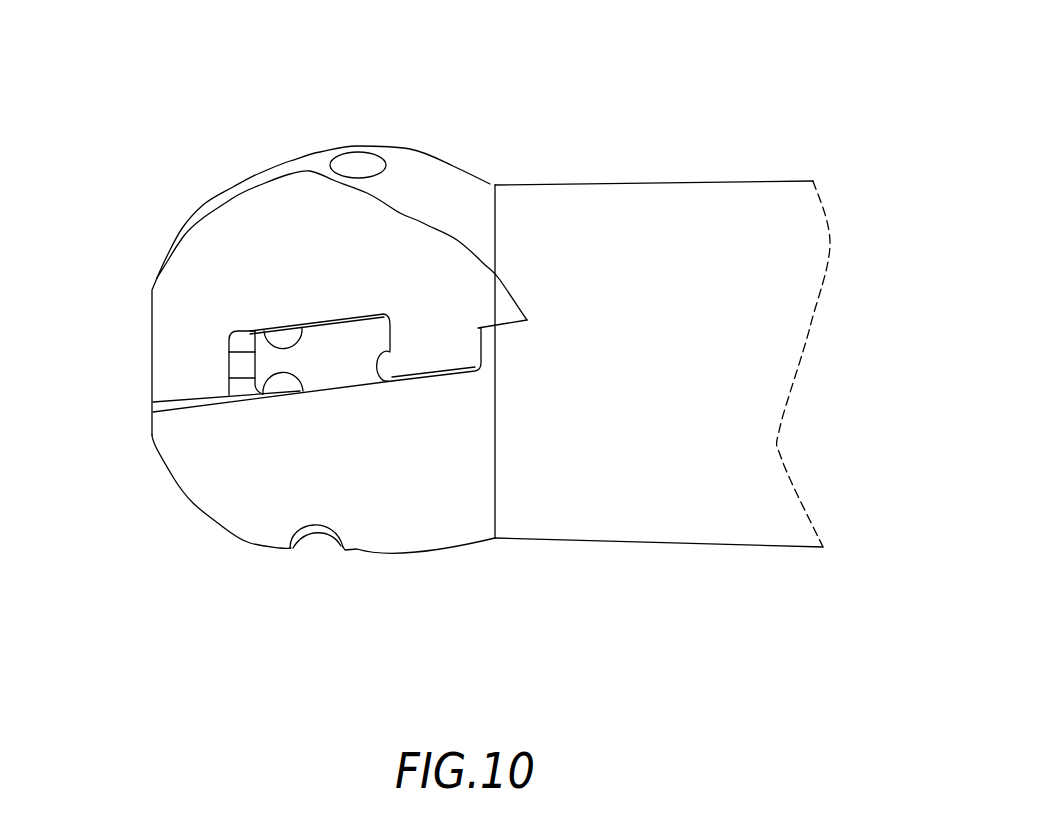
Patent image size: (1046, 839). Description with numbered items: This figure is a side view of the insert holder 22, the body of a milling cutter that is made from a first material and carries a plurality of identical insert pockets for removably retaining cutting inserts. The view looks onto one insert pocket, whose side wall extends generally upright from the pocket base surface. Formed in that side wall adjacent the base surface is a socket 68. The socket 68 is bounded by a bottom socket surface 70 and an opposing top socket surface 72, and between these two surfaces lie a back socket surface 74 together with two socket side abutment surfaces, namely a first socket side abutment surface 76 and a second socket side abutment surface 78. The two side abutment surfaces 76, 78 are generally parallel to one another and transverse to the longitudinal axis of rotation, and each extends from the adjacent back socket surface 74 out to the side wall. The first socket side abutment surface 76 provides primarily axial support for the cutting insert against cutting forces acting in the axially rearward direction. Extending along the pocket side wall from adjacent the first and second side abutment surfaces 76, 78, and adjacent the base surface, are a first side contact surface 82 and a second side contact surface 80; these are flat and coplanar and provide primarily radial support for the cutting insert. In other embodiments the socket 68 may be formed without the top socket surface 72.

The insert holder 22 is at (143, 77).
The socket 68 is at (367, 342).
The bottom socket surface 70 is at (262, 395).
The top socket surface 72 is at (262, 332).
The back socket surface 74 is at (343, 340).
The first socket side abutment surface 76 is at (376, 382).
The second socket side abutment surface 78 is at (241, 368).
The second side contact surface 80 is at (168, 367).
The first side contact surface 82 is at (435, 343).